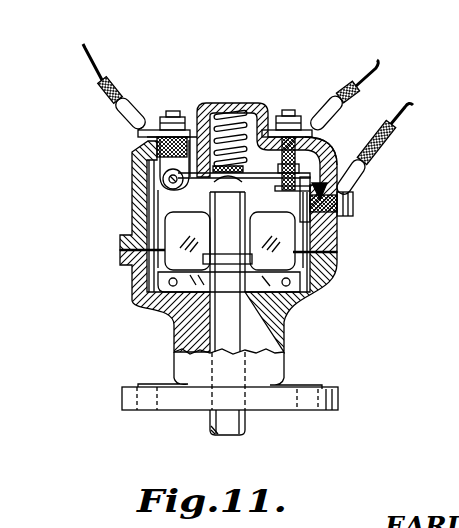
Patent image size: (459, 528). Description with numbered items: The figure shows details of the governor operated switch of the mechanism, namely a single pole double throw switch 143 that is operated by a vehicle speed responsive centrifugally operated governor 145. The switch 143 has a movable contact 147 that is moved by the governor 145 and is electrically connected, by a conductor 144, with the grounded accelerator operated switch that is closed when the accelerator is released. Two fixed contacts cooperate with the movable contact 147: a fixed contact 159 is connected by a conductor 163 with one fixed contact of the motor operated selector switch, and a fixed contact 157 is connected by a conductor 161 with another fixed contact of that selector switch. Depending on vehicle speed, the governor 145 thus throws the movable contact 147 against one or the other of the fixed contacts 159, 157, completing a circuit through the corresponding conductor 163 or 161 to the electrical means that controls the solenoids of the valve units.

The single pole double throw switch 143 is at (117, 192).
The conductor 144 is at (100, 68).
The vehicle speed responsive centrifugally operated governor 145 is at (287, 317).
The movable contact 147 is at (263, 130).
The fixed contact 157 is at (340, 186).
The fixed contact 159 is at (322, 156).
The conductor 161 is at (409, 107).
The conductor 163 is at (374, 63).